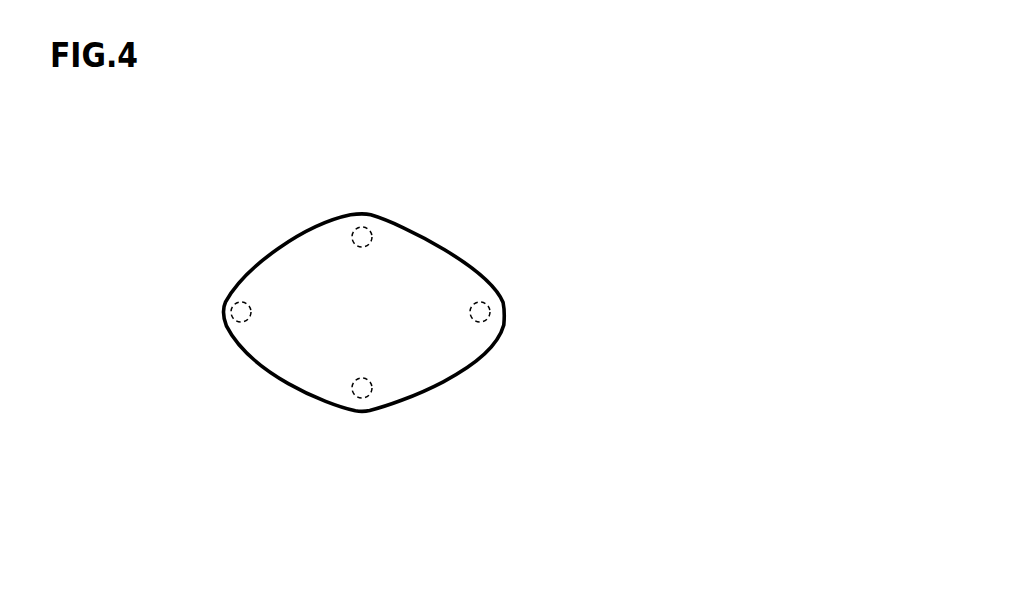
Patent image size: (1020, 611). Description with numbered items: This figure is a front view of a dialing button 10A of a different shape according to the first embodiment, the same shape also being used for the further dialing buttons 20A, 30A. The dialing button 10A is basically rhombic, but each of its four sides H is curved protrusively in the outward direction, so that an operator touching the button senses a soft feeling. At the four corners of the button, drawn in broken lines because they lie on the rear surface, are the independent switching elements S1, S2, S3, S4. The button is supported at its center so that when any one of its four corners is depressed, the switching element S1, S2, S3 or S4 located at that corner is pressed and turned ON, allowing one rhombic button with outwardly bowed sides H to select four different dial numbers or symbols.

The dialing button 10A is at (559, 326).
The dialing button 20A is at (380, 356).
The dialing button 30A is at (380, 356).
The side H is at (433, 370).
The switching element S1 is at (355, 233).
The switching element S2 is at (241, 312).
The switching element S3 is at (361, 388).
The switching element S4 is at (482, 312).